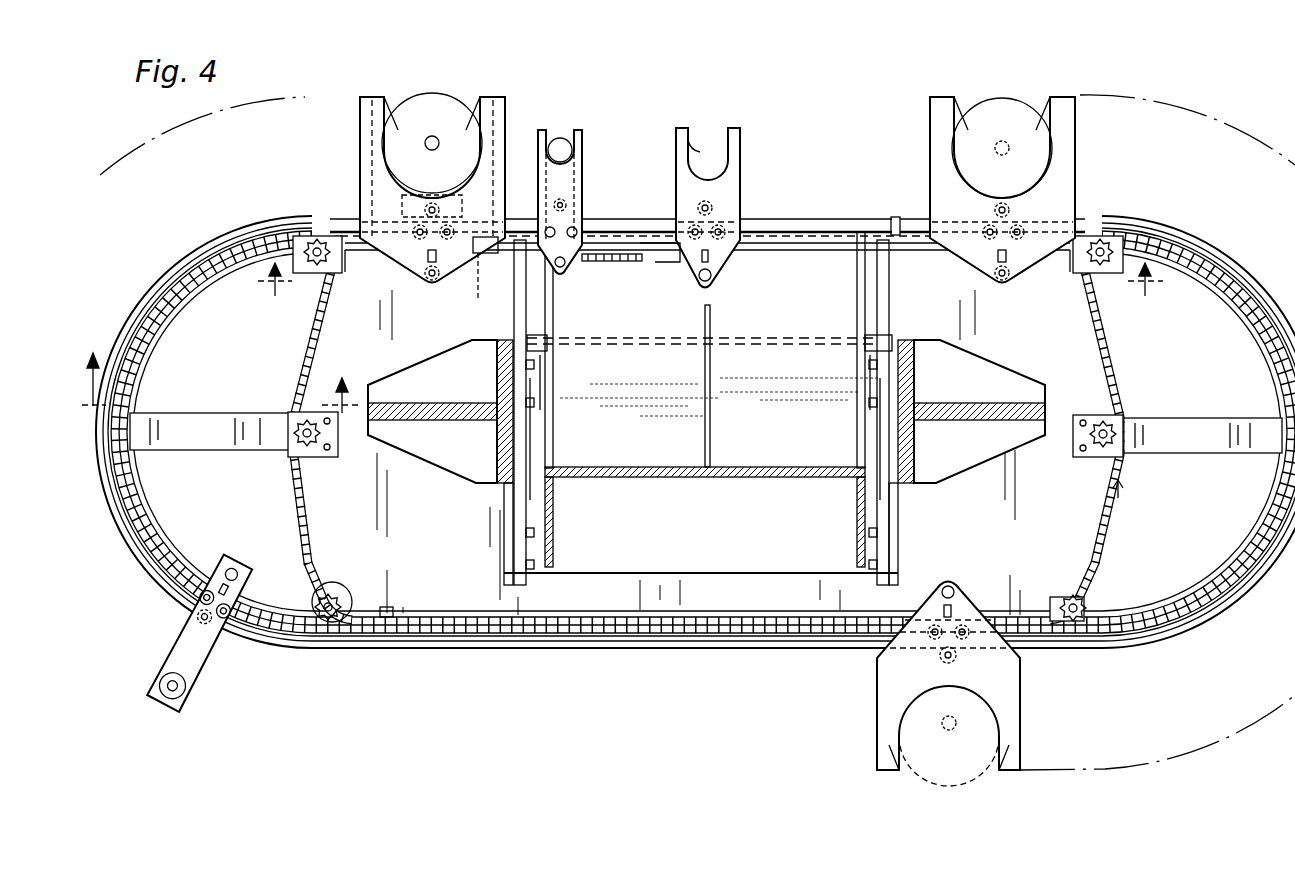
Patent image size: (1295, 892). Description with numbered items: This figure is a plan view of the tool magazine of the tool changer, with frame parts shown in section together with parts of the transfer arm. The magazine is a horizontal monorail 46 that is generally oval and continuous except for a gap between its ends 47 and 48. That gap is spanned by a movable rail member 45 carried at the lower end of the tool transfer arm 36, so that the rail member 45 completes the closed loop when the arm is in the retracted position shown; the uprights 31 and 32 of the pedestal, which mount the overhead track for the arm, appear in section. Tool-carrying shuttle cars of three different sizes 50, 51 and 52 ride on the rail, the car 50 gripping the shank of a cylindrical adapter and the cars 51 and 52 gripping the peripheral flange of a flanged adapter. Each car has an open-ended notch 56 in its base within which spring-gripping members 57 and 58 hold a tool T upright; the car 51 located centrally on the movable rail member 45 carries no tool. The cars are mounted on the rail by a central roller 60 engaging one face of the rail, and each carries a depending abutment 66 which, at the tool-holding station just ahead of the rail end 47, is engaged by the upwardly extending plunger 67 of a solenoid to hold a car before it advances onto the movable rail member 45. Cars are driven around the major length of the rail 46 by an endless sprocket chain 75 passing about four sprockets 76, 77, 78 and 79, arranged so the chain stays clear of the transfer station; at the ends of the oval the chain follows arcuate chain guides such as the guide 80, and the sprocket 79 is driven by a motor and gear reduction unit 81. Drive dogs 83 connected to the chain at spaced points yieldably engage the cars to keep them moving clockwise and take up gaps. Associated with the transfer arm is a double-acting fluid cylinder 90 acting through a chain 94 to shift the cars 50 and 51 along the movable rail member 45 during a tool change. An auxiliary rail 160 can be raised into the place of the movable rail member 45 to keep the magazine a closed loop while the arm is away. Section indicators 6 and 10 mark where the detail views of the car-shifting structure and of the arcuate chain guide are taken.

The section line 6 is at (710, 295).
The section line 10 is at (222, 366).
The upright 31 is at (1008, 390).
The upright 32 is at (428, 378).
The tool transfer arm 36 is at (764, 467).
The movable rail member 45 is at (800, 218).
The horizontal monorail 46 is at (1208, 274).
The rail end 47 is at (516, 220).
The rail end 48 is at (897, 218).
The shuttle car 50 is at (566, 176).
The shuttle car 51 is at (722, 178).
The shuttle car 52 is at (505, 110).
The open-ended notch 56 is at (690, 156).
The spring-gripping member 57 is at (392, 100).
The spring-gripping member 58 is at (480, 100).
The central roller 60 is at (1012, 226).
The depending abutment 66 is at (414, 266).
The plunger 67 is at (450, 268).
The endless sprocket chain 75 is at (1112, 368).
The sprocket 76 is at (1104, 244).
The sprocket 77 is at (1072, 600).
The sprocket 78 is at (318, 248).
The sprocket 79 is at (330, 594).
The arcuate chain guide 80 is at (132, 378).
The motor and gear reduction unit 81 is at (350, 594).
The drive dog 83 is at (1222, 585).
The double-acting fluid cylinder 90 is at (664, 262).
The chain 94 is at (606, 262).
The auxiliary rail 160 is at (880, 342).
The tool T is at (420, 97).